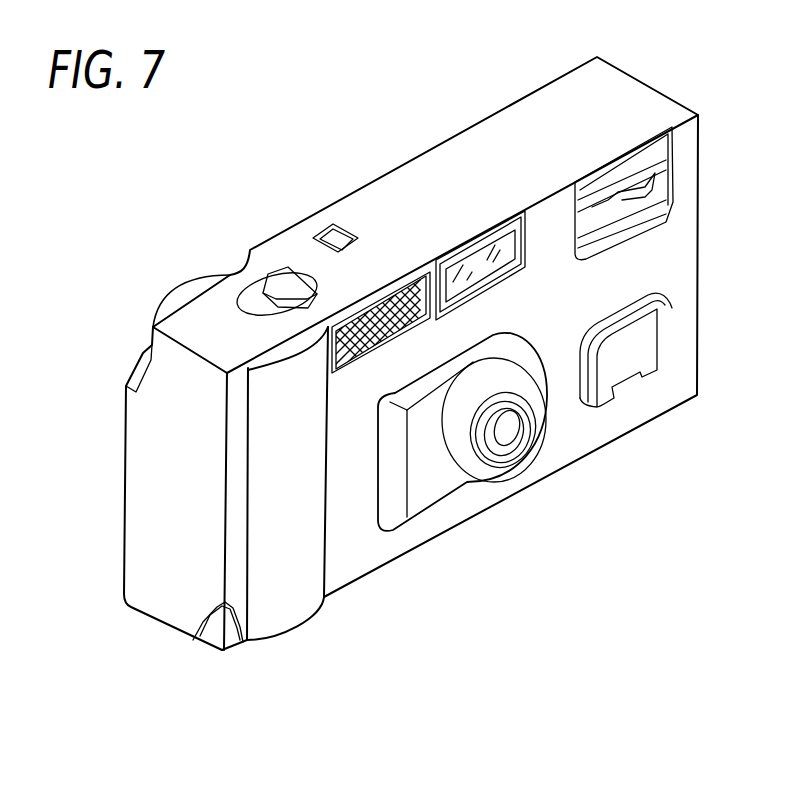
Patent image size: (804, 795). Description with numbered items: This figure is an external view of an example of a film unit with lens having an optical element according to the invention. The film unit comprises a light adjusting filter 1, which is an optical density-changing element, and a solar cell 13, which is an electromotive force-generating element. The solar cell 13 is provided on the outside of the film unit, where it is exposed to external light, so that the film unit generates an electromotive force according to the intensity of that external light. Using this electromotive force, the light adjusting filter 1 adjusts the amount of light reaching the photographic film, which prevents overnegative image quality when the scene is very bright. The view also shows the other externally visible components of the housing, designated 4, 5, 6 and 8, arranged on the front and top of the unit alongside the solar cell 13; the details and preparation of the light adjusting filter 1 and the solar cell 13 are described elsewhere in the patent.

The light adjusting filter 1 is at (441, 85).
The taking lens 4 is at (500, 440).
The viewfinder objective window 5 is at (528, 267).
The flash emitting window 6 is at (670, 197).
The shutter button 8 is at (297, 273).
The solar cell 13 is at (398, 272).